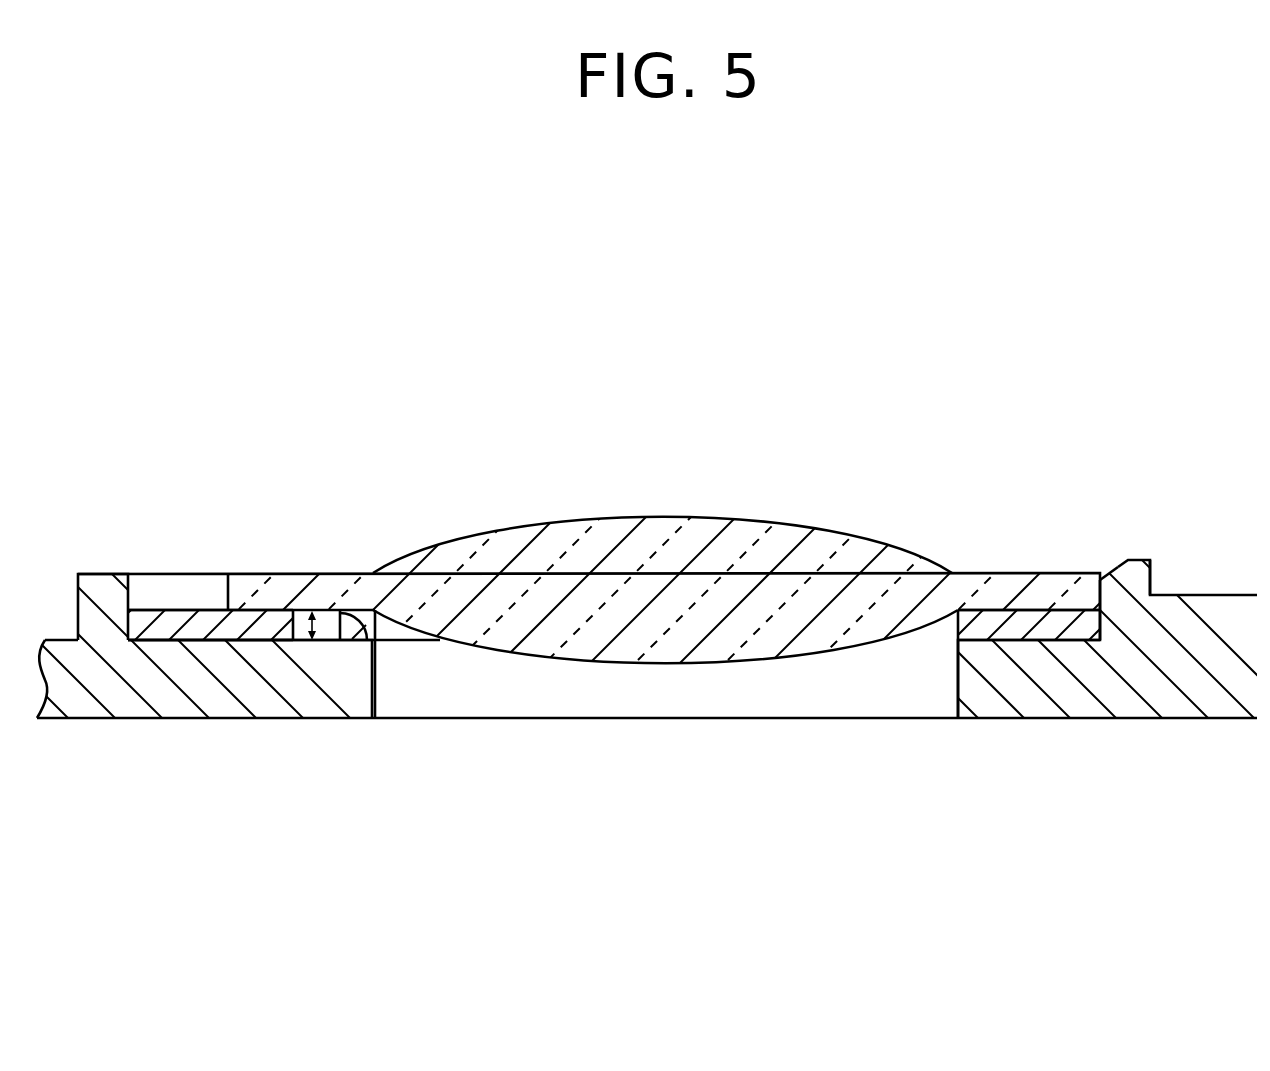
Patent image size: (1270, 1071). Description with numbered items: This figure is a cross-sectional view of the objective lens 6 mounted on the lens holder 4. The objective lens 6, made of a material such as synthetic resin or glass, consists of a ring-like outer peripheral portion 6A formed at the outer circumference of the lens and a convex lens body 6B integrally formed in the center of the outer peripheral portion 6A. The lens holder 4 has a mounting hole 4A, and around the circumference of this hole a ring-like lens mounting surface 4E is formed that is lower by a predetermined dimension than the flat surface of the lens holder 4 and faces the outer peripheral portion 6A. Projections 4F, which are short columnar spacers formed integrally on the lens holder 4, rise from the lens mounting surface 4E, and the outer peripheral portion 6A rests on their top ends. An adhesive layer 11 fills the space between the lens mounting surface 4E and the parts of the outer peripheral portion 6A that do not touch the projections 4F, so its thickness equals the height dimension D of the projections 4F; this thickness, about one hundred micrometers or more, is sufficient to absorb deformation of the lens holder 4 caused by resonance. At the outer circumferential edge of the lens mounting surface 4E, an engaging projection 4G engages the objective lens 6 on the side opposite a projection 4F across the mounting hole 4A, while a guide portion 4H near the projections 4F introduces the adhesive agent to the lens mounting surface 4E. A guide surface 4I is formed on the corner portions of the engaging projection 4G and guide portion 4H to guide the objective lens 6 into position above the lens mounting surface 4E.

The lens holder 4 is at (1101, 730).
The mounting hole 4A is at (958, 690).
The lens mounting surface 4E is at (168, 640).
The projection 4F is at (322, 640).
The engaging projection 4G is at (1136, 567).
The guide portion 4H is at (108, 587).
The guide surface 4I is at (1110, 577).
The objective lens 6 is at (845, 384).
The outer peripheral portion 6A is at (995, 577).
The convex lens body 6B is at (849, 550).
The adhesive layer 11 is at (243, 640).
The height dimension D is at (322, 640).